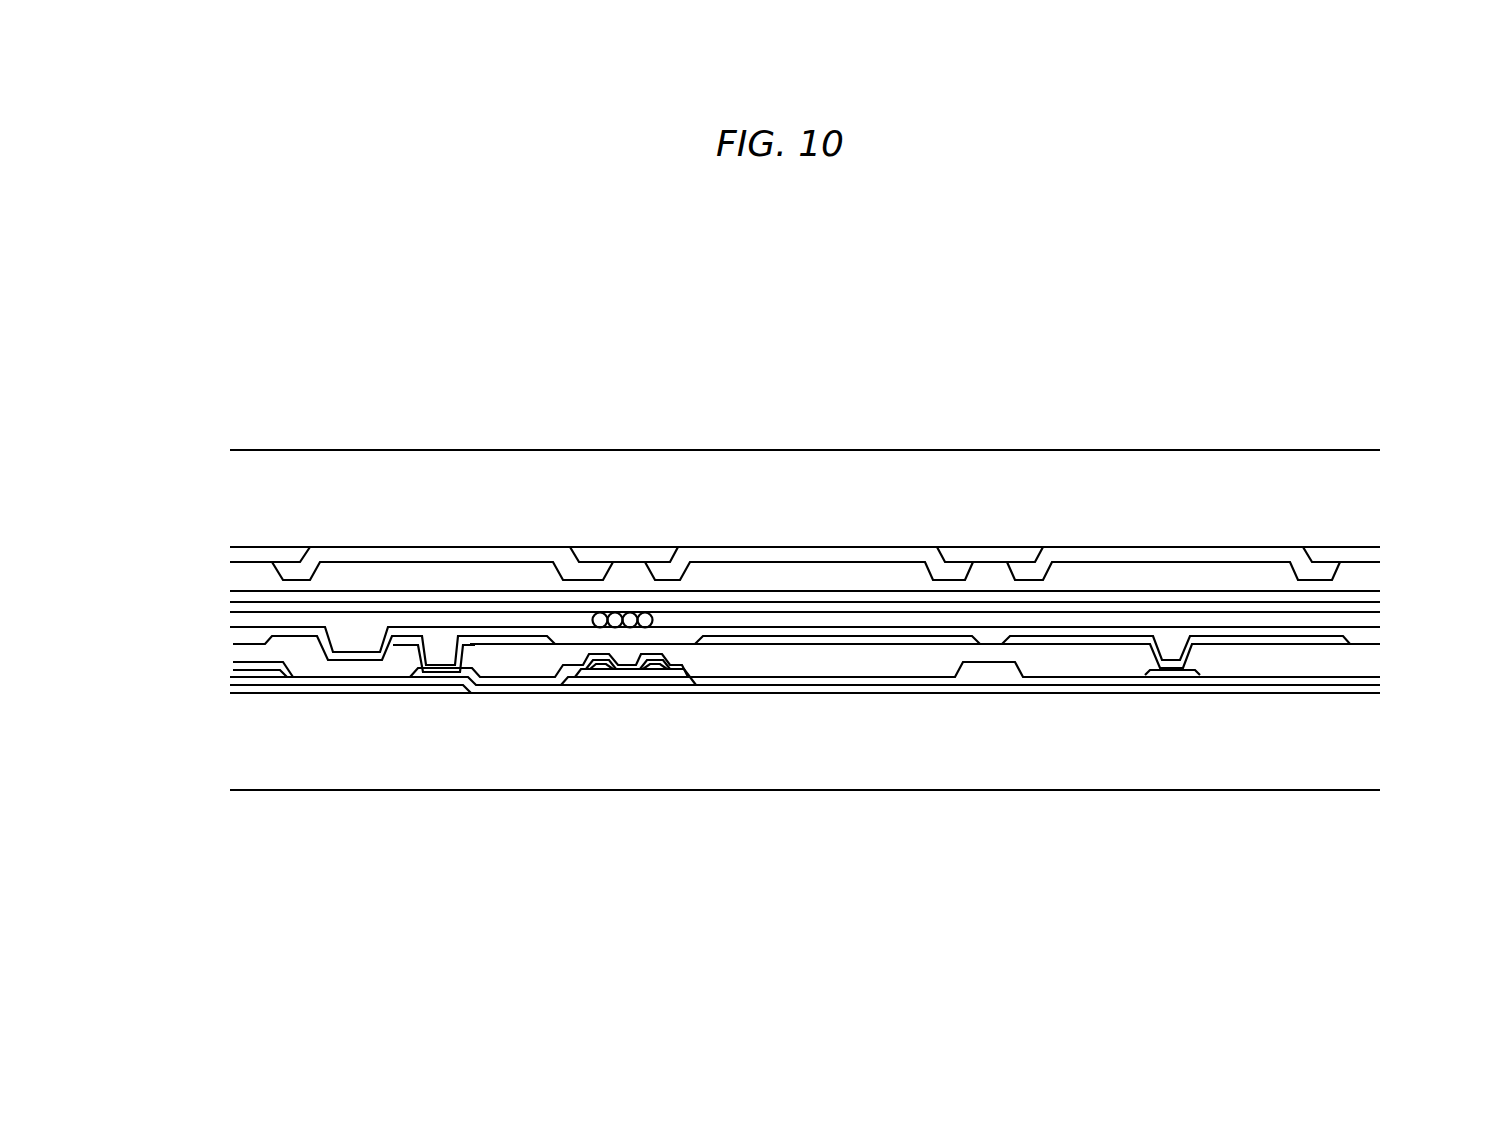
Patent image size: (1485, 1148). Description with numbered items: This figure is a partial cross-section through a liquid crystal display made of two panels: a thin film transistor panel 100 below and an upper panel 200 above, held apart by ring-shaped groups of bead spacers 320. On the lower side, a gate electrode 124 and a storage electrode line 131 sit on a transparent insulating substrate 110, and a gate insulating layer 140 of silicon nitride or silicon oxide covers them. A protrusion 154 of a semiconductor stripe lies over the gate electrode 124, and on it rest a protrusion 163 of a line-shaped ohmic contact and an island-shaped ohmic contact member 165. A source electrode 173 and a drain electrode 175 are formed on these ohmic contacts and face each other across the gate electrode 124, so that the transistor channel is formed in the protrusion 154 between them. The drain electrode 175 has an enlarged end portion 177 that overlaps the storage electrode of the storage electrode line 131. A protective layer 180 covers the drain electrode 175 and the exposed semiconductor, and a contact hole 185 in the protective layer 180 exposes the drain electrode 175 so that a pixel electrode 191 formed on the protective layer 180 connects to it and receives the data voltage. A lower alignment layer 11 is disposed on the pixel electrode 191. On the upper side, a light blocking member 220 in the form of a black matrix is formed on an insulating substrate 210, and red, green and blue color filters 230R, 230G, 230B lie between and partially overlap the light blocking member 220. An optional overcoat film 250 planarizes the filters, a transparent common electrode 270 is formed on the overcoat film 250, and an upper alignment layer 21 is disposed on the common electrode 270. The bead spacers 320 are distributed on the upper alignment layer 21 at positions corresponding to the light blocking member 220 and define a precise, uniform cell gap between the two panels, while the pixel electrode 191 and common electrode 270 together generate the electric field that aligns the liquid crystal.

The upper panel 200 is at (1341, 416).
The insulating substrate 210 is at (243, 500).
The light blocking member 220 is at (605, 555).
The blue color filter 230B is at (385, 558).
The green color filter 230G is at (798, 558).
The red color filter 230R is at (1147, 558).
The overcoat film 250 is at (243, 580).
The common electrode 270 is at (258, 598).
The upper alignment layer 21 is at (258, 614).
The bead spacers 320 is at (632, 612).
The lower alignment layer 11 is at (1363, 636).
The protective layer 180 is at (1363, 655).
The pixel electrode 191 is at (1252, 640).
The contact hole 185 is at (445, 650).
The enlarged end portion 177 is at (433, 668).
The gate insulating layer 140 is at (905, 680).
The storage electrode line 131 is at (970, 688).
The insulating substrate 110 is at (489, 770).
The thin film transistor panel 100 is at (1345, 819).
The gate electrode 124 is at (641, 679).
The protrusion 154 is at (630, 684).
The protrusion 163 is at (655, 664).
The island-shaped ohmic contact member 165 is at (578, 668).
The source electrode 173 is at (668, 655).
The drain electrode 175 is at (590, 662).